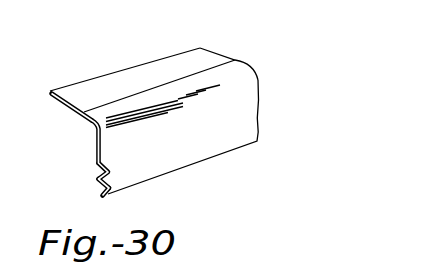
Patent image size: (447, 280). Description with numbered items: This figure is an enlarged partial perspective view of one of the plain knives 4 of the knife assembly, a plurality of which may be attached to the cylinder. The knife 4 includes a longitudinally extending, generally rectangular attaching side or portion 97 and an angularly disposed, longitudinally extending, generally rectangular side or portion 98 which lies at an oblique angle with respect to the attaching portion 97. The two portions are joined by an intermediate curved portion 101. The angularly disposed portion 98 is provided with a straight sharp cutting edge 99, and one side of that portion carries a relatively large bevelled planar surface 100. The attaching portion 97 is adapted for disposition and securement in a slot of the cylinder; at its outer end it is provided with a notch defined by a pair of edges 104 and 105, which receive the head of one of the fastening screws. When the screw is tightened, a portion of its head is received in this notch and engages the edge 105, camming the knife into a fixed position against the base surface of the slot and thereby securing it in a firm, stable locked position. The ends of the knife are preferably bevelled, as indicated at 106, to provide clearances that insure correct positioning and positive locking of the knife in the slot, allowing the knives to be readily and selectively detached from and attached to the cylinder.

The plain knife 4 is at (221, 52).
The attaching side or portion 97 is at (247, 122).
The angularly disposed side or portion 98 is at (68, 108).
The straight sharp cutting edge 99 is at (137, 63).
The bevelled planar surface 100 is at (182, 62).
The intermediate curved portion 101 is at (88, 124).
The notch edge 104 is at (98, 171).
The notch edge 105 is at (99, 178).
The bevelled knife end 106 is at (100, 192).